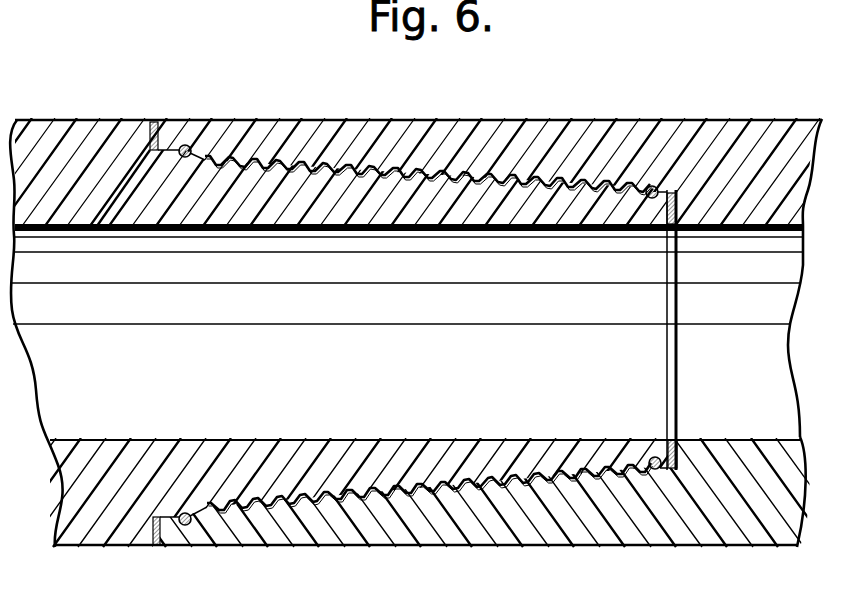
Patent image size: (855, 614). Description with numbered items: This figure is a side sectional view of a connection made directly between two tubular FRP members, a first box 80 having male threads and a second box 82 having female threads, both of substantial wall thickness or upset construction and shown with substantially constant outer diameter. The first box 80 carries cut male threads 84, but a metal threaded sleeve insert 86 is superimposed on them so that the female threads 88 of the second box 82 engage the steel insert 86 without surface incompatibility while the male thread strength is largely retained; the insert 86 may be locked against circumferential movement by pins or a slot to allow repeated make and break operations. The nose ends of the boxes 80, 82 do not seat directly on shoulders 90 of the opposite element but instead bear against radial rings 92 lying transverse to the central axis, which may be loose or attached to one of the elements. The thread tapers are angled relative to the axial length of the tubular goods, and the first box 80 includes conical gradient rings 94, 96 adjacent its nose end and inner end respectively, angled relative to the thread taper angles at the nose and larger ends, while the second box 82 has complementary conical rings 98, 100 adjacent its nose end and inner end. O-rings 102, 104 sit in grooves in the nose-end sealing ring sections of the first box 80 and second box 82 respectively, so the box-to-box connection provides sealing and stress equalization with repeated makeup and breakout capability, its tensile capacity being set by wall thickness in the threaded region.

The first box 80 is at (55, 546).
The second box 82 is at (761, 119).
The male threads 84 is at (375, 233).
The metal threaded sleeve insert 86 is at (472, 168).
The female threads 88 is at (432, 497).
The shoulders 90 is at (148, 120).
The radial rings 92 is at (142, 246).
The conical gradient ring 94 is at (142, 231).
The conical gradient ring 96 is at (608, 236).
The conical ring 98 is at (180, 147).
The conical ring 100 is at (655, 188).
The O-ring 102 is at (642, 233).
The O-ring 104 is at (197, 157).